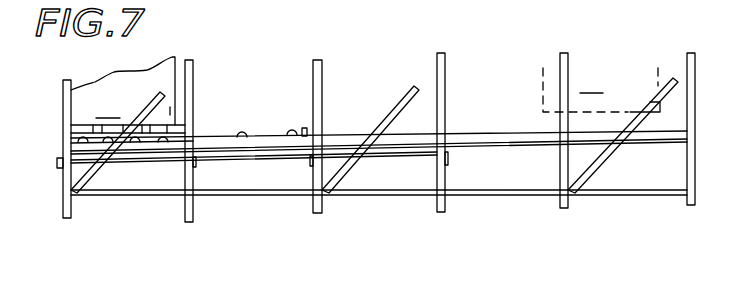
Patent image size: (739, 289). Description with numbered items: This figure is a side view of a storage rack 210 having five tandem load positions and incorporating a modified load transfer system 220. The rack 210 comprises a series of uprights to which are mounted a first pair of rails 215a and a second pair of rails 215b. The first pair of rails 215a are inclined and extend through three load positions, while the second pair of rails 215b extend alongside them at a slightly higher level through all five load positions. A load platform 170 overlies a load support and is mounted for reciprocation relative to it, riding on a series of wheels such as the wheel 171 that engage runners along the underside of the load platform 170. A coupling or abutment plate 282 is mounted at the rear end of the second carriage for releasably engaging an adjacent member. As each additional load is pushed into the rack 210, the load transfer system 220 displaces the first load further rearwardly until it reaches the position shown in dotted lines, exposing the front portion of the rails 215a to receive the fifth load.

The load platform 170 is at (176, 122).
The wheel 171 is at (248, 129).
The coupling or abutment plate 282 is at (305, 133).
The first pair of rails 215a is at (283, 153).
The second pair of rails 215b is at (388, 106).
The storage rack 210 is at (191, 199).
The load transfer system 220 is at (165, 203).